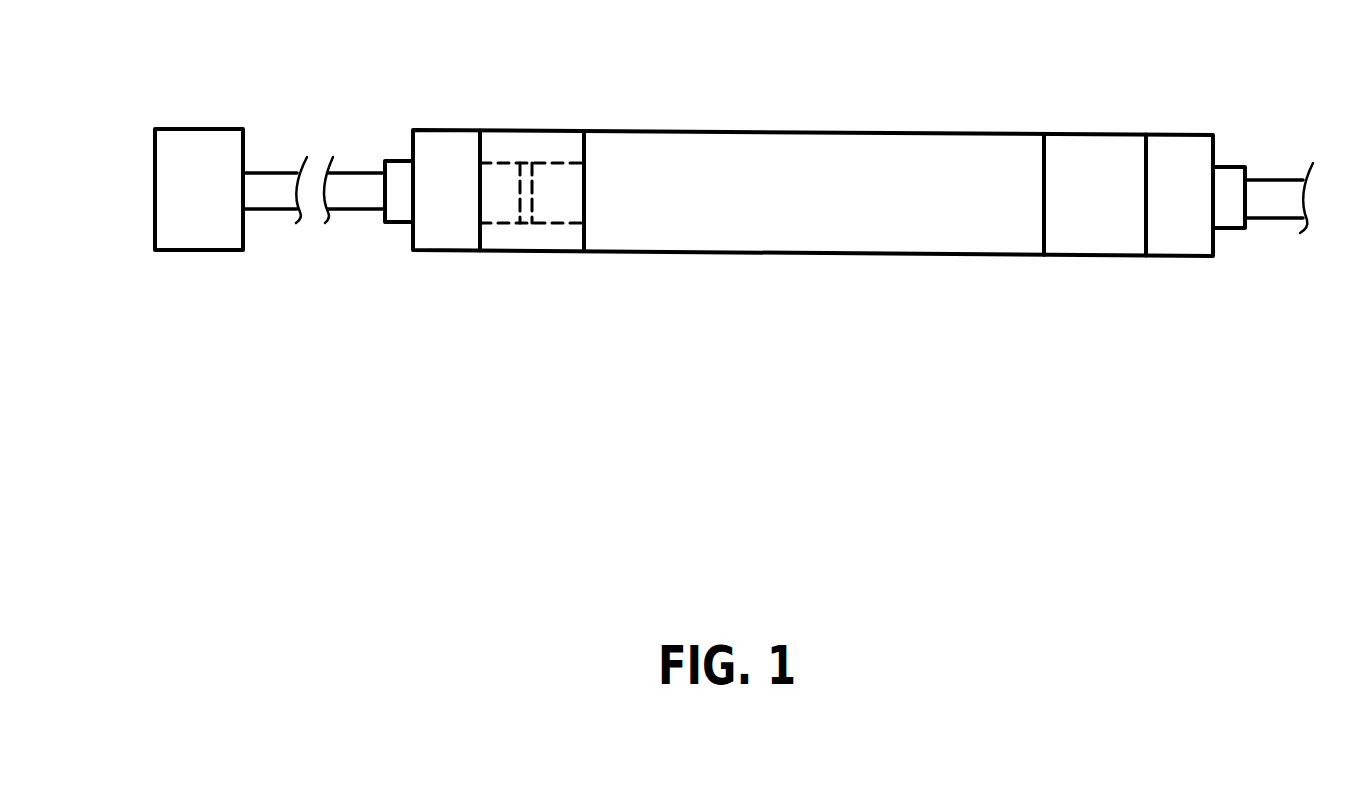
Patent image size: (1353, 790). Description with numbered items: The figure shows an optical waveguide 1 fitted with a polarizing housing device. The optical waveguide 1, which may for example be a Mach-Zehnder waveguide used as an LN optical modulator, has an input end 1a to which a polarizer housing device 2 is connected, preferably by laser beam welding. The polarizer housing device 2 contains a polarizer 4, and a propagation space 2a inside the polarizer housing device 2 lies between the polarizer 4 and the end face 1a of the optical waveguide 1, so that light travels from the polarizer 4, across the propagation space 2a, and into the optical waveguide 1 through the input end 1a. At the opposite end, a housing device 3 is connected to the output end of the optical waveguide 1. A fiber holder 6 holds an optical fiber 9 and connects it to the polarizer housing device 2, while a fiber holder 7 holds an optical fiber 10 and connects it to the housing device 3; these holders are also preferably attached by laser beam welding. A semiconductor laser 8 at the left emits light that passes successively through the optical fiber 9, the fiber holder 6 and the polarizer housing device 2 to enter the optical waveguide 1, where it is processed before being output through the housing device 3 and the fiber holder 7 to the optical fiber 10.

The optical waveguide 1 is at (855, 133).
The input end 1a is at (587, 208).
The polarizer housing device 2 is at (517, 128).
The propagation space 2a is at (563, 175).
The housing device 3 is at (1095, 133).
The polarizer 4 is at (535, 195).
The fiber holder 6 is at (440, 128).
The fiber holder 7 is at (1188, 133).
The semiconductor laser 8 is at (207, 128).
The optical fiber 9 is at (351, 183).
The optical fiber 10 is at (1280, 212).